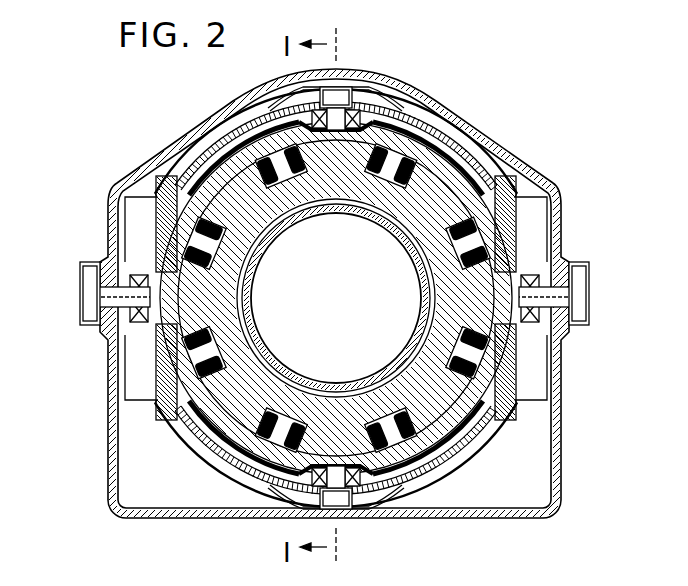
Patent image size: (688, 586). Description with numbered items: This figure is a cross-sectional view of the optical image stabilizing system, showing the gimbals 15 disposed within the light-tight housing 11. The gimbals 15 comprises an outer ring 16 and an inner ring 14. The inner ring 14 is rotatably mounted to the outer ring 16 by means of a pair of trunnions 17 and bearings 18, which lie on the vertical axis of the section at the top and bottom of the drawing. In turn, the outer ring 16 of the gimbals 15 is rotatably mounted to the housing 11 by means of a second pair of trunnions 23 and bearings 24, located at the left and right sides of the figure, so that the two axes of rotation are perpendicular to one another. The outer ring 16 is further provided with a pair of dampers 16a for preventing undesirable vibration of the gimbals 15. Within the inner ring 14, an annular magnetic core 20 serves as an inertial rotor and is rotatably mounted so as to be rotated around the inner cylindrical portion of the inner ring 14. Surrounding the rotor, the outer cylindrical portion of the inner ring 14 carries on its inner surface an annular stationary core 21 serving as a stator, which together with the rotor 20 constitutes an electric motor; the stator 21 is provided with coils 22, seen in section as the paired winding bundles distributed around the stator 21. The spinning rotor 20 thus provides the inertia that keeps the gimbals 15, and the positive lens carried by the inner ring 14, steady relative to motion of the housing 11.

The light-tight housing 11 is at (517, 158).
The inner ring 14 is at (407, 140).
The gimbals 15 is at (471, 145).
The outer ring 16 is at (452, 135).
The dampers 16a is at (132, 222).
The trunnions 17 is at (338, 95).
The bearings 18 is at (357, 110).
The annular magnetic core 20 is at (412, 373).
The annular stationary core 21 is at (220, 190).
The coils 22 is at (267, 168).
The trunnions 23 is at (95, 330).
The bearings 24 is at (128, 317).